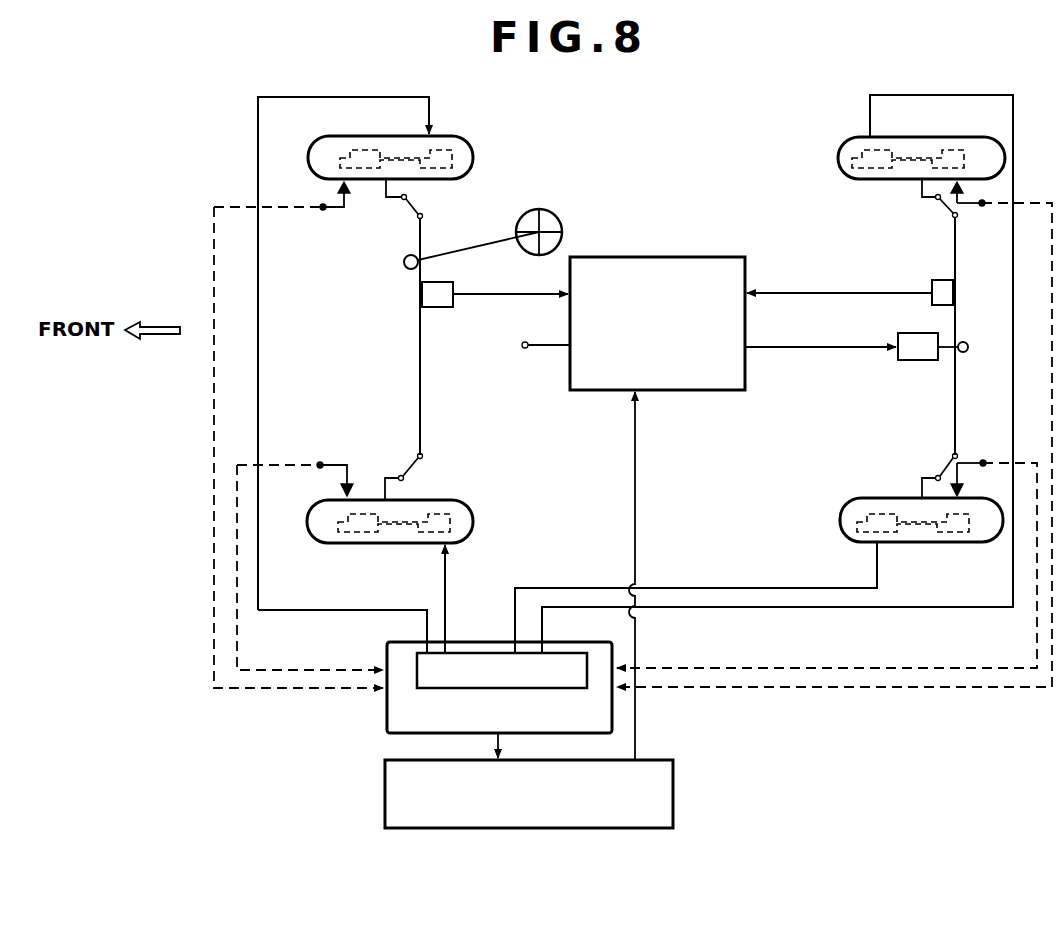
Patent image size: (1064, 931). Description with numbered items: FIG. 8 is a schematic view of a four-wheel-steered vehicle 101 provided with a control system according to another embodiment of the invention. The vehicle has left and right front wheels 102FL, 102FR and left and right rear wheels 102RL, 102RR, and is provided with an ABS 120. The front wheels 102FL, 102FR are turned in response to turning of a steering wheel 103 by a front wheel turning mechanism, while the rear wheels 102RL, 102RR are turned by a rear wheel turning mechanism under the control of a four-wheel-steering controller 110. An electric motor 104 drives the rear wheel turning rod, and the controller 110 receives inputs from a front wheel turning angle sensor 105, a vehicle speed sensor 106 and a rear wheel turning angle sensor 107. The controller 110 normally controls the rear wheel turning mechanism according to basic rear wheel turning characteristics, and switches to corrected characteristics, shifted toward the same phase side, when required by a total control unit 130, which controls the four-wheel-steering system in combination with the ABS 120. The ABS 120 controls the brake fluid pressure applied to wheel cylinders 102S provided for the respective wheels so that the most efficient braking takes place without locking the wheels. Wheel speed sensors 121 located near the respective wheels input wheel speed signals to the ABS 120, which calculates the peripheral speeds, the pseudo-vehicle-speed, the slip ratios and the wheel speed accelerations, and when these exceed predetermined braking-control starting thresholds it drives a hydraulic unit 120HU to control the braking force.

The four-wheel-steered vehicle 101 is at (746, 128).
The right front wheel 102FR is at (468, 148).
The left front wheel 102FL is at (333, 543).
The right rear wheel 102RR is at (990, 137).
The left rear wheel 102RL is at (960, 543).
The wheel cylinder 102S is at (450, 150).
The steering wheel 103 is at (510, 221).
The electric motor 104 is at (922, 360).
The front wheel turning angle sensor 105 is at (455, 307).
The vehicle speed sensor 106 is at (525, 350).
The rear wheel turning angle sensor 107 is at (930, 280).
The four-wheel-steering controller 110 is at (678, 257).
The ABS 120 is at (387, 732).
The hydraulic unit 120HU is at (417, 683).
The wheel speed sensor 121 is at (344, 192).
The total control unit 130 is at (673, 808).